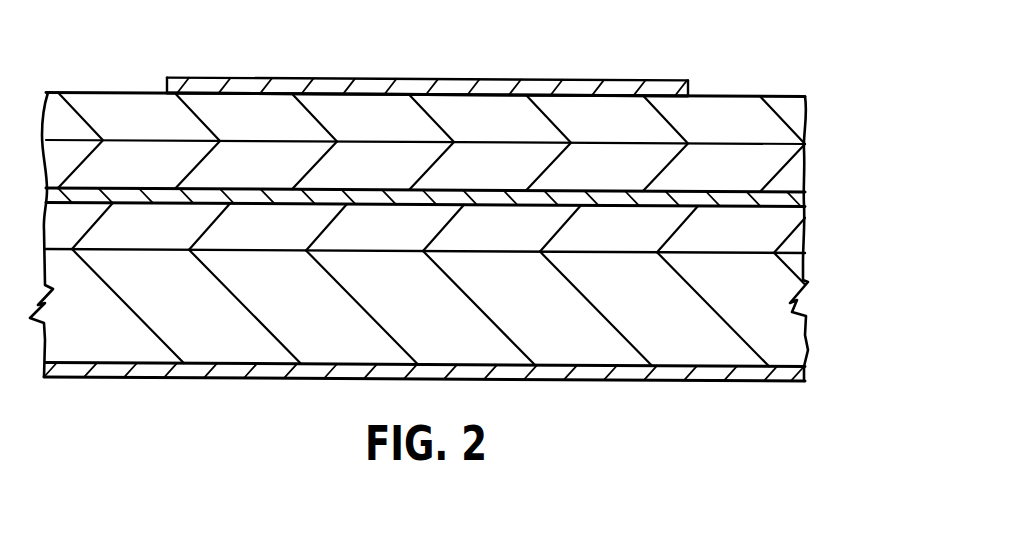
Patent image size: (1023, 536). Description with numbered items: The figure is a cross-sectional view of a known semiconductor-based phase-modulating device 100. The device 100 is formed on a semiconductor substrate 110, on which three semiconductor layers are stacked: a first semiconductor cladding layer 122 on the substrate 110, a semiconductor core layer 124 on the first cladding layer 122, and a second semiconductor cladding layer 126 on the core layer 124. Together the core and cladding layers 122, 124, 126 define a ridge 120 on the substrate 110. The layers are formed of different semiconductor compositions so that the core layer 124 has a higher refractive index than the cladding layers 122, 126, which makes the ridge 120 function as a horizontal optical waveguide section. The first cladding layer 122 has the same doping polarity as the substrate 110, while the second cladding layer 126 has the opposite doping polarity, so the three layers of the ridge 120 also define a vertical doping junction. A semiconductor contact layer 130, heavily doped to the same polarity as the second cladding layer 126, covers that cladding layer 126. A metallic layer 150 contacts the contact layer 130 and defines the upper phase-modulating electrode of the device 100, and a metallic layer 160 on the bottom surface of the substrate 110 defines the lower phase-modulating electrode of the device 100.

The phase-modulating device 100 is at (549, 60).
The metallic layer 150 is at (665, 80).
The semiconductor contact layer 130 is at (797, 118).
The ridge 120 is at (943, 155).
The second semiconductor cladding layer 126 is at (797, 175).
The semiconductor core layer 124 is at (797, 200).
The first semiconductor cladding layer 122 is at (790, 223).
The semiconductor substrate 110 is at (782, 320).
The metallic layer 160 is at (808, 373).